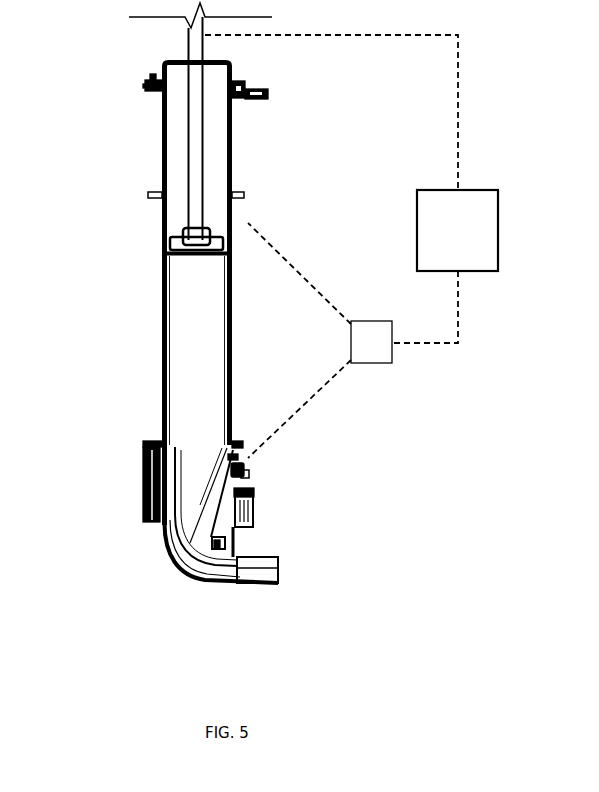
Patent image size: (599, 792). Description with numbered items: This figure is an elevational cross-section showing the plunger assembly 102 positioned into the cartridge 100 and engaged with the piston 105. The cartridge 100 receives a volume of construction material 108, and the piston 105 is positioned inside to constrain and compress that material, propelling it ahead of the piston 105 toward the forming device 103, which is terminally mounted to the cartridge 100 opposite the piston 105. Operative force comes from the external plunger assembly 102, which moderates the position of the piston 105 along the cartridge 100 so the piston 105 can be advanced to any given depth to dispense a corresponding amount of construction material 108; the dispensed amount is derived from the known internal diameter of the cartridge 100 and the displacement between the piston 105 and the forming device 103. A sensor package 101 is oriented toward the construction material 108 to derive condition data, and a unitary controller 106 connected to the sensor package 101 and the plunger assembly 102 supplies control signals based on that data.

The cartridge 100 is at (162, 213).
The sensor package 101 is at (371, 342).
The plunger assembly 102 is at (207, 211).
The forming device 103 is at (285, 460).
The piston 105 is at (160, 253).
The unitary controller 106 is at (457, 230).
The volume of construction material 108 is at (180, 390).